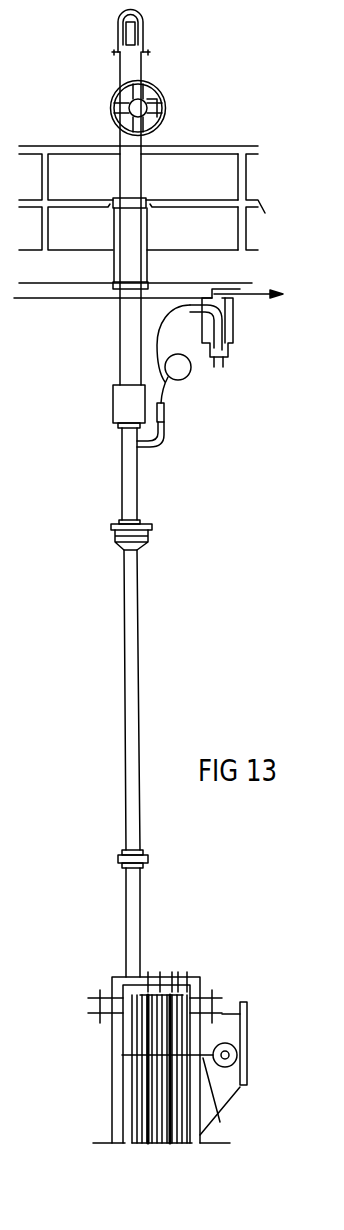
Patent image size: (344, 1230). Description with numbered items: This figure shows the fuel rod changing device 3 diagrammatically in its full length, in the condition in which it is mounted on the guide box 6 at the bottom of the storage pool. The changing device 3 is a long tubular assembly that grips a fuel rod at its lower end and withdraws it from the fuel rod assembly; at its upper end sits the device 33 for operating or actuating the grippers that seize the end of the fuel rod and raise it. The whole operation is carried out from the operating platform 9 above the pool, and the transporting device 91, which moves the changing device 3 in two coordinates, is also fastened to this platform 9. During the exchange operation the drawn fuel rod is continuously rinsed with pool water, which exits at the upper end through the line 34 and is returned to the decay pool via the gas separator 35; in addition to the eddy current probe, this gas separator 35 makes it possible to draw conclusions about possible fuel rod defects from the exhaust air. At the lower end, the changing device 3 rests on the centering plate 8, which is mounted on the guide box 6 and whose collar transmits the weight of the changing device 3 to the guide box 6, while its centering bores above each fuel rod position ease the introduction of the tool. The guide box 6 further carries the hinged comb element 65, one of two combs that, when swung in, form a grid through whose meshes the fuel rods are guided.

The fuel rod changing device 3 is at (137, 576).
The guide box 6 is at (237, 1088).
The centering plate 8 is at (149, 977).
The operating platform 9 is at (219, 133).
The device for operating the grippers 33 is at (113, 97).
The line 34 is at (166, 398).
The gas separator 35 is at (234, 331).
The hinged comb element 65 is at (215, 1113).
The transporting device 91 is at (147, 231).